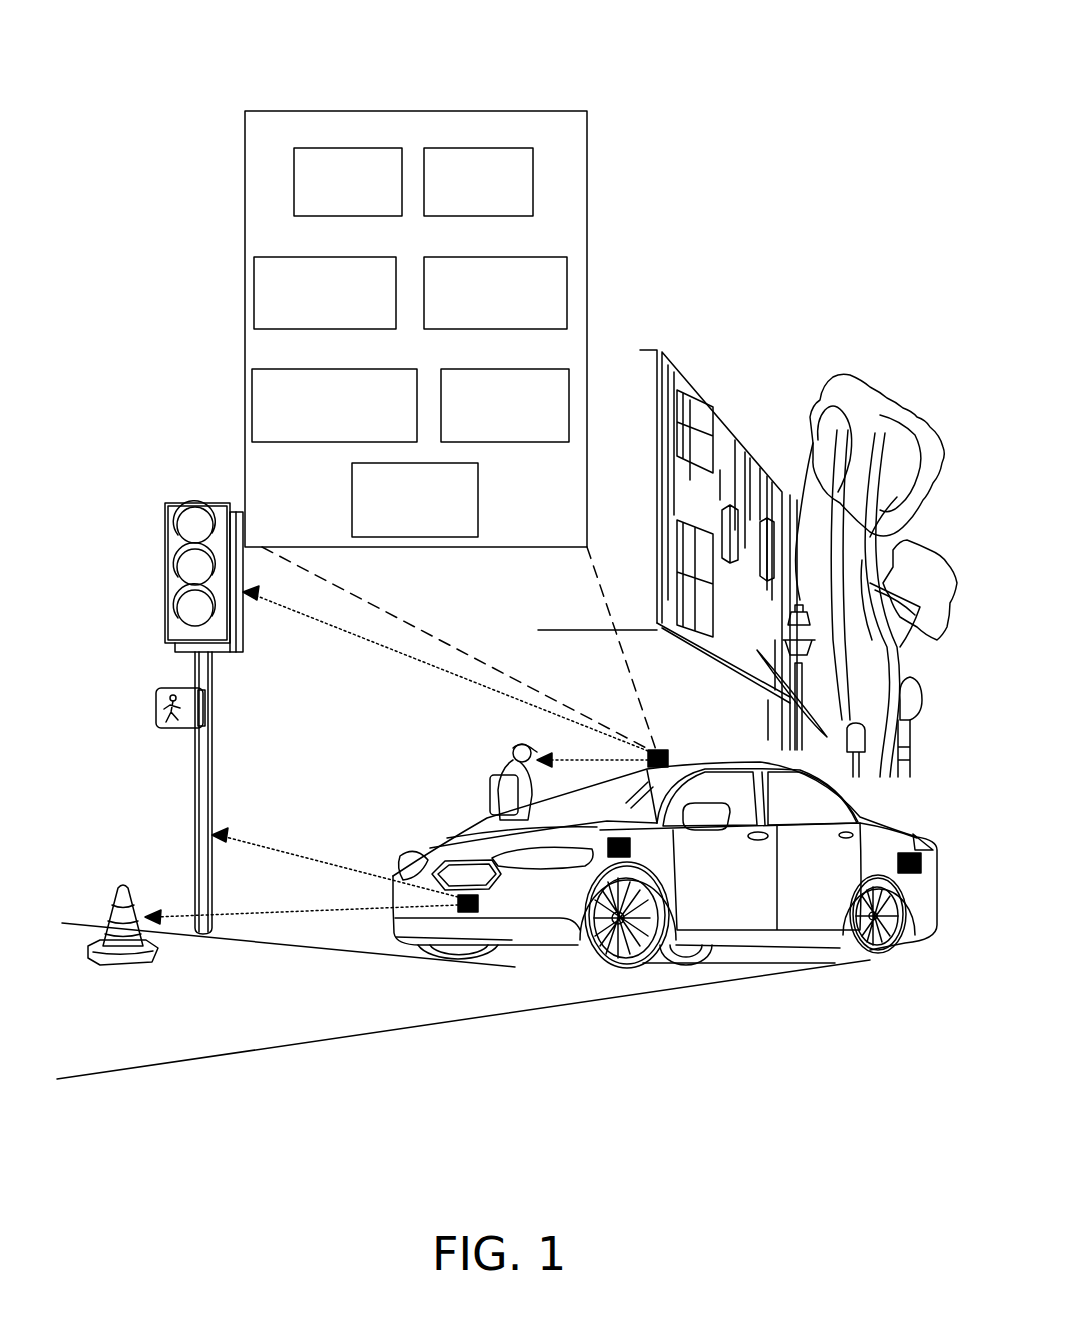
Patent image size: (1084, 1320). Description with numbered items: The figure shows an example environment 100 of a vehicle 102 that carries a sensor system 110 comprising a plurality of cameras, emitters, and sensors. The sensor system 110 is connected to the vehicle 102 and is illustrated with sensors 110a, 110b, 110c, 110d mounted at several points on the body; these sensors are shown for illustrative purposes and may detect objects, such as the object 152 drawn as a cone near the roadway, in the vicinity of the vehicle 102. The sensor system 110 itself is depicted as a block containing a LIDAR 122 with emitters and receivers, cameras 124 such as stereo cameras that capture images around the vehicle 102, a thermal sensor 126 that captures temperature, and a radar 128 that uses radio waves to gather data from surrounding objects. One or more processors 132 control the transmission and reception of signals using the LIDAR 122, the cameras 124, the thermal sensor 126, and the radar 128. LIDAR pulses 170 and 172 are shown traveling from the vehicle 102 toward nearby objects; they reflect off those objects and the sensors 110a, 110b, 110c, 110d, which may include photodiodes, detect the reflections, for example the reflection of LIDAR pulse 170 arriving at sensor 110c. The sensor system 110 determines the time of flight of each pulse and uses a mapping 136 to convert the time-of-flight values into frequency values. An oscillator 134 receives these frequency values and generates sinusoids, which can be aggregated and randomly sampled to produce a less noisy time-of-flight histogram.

The environment 100 is at (859, 52).
The vehicle 102 is at (671, 826).
The sensor system 110 is at (414, 111).
The sensor 110a is at (670, 750).
The sensor 110b is at (616, 838).
The sensor 110c is at (478, 908).
The sensor 110d is at (930, 850).
The LIDAR 122 is at (500, 257).
The cameras 124 is at (330, 257).
The thermal sensor 126 is at (330, 148).
The radar 128 is at (460, 148).
The processors 132 is at (335, 369).
The oscillator 134 is at (514, 369).
The mapping 136 is at (352, 497).
The object 152 is at (128, 968).
The LIDAR pulse 170 is at (268, 843).
The LIDAR pulse 172 is at (288, 906).